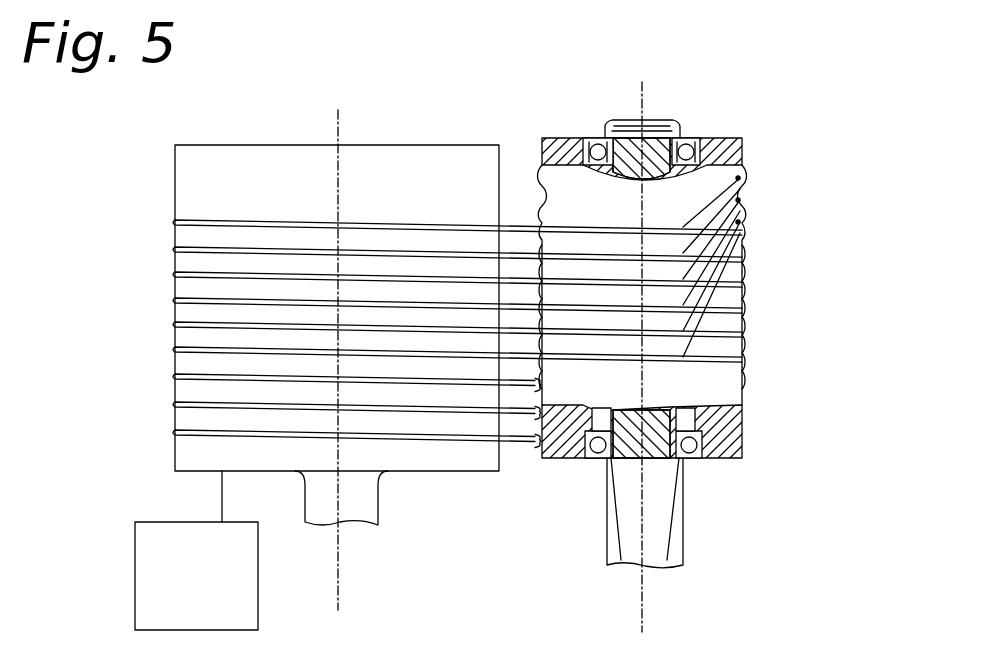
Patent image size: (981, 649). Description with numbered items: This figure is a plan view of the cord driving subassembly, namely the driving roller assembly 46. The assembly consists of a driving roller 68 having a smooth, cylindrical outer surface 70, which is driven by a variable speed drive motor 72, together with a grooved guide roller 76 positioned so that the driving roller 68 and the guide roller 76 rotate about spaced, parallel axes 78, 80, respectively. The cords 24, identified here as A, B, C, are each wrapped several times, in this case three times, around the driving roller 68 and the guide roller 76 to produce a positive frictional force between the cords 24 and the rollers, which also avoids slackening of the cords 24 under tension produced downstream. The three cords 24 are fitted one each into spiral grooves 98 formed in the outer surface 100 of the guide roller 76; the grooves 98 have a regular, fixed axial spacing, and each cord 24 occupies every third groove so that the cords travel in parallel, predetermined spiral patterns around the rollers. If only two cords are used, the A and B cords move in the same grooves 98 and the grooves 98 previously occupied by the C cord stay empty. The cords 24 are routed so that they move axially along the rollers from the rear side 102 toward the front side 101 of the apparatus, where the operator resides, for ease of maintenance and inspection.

The cords 24 is at (742, 233).
The driving roller assembly 46 is at (693, 80).
The driving roller 68 is at (378, 160).
The outer surface 70 is at (468, 168).
The drive motor 72 is at (209, 622).
The guide roller 76 is at (692, 430).
The axis 78 is at (338, 592).
The axis 80 is at (644, 614).
The spiral grooves 98 is at (538, 212).
The outer surface 100 is at (745, 436).
The front side 101 is at (790, 574).
The rear side 102 is at (577, 68).
The cord A is at (175, 274).
The cord B is at (175, 249).
The cord C is at (175, 222).